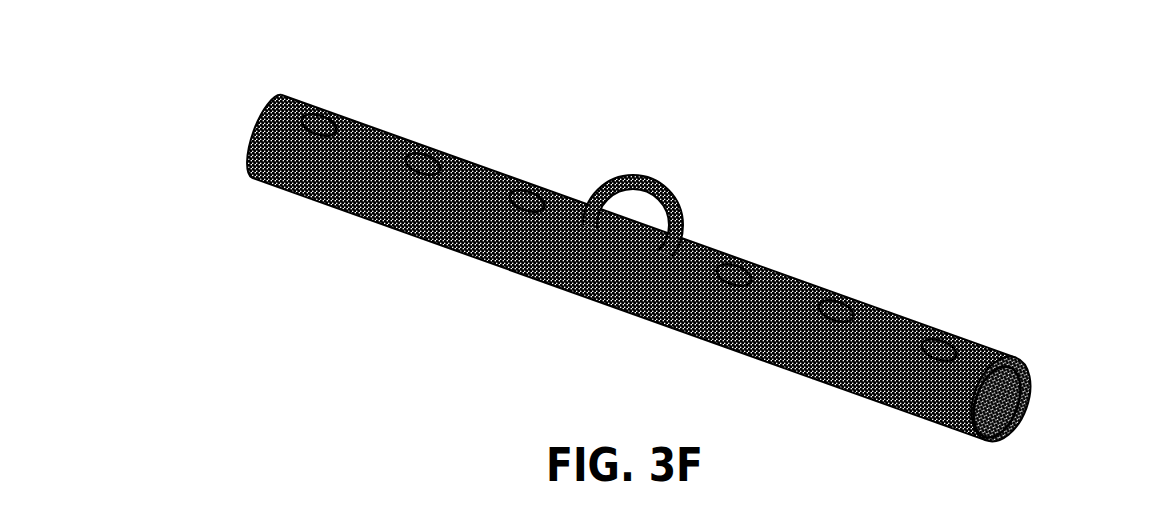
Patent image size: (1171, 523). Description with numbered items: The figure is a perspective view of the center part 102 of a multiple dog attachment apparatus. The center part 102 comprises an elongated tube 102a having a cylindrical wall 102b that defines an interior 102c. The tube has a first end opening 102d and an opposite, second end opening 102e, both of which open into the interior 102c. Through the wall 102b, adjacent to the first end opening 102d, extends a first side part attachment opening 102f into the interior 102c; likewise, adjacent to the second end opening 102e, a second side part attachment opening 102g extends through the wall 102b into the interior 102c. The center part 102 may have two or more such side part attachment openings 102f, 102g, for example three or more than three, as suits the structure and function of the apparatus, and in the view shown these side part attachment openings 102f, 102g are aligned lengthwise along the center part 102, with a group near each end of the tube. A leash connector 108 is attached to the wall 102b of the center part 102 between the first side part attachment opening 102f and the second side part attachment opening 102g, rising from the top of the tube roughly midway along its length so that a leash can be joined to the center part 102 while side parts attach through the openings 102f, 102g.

The center part 102 is at (691, 92).
The elongated tube 102a is at (546, 313).
The cylindrical wall 102b is at (540, 248).
The interior 102c is at (994, 404).
The first end opening 102d is at (208, 169).
The second end opening 102e is at (1043, 372).
The first side part attachment opening 102f is at (349, 96).
The second side part attachment opening 102g is at (762, 250).
The leash connector 108 is at (690, 155).